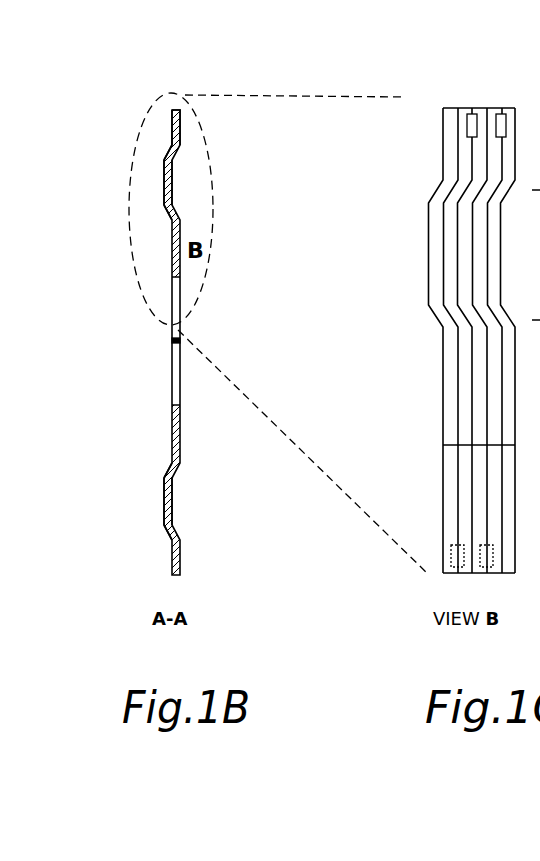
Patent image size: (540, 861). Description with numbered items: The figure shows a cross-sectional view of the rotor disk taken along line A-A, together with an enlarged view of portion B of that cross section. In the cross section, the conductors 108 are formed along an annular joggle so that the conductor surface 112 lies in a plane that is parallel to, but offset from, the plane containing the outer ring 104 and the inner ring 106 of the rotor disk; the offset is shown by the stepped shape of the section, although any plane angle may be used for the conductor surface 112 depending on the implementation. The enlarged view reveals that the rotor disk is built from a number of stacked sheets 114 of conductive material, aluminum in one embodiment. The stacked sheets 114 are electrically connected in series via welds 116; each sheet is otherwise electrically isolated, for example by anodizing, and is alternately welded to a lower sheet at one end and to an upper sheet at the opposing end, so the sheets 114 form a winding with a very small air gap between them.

In FIG. 1B, the outer ring 104 is at (172, 113).
In FIG. 1B, the inner ring 106 is at (172, 245).
In FIG. 1B, the conductors 108 is at (174, 180).
In FIG. 1B, the conductor surface 112 is at (158, 183).
In FIG. 1C, the stacked sheets 114 is at (523, 120).
In FIG. 1C, the welds 116 is at (466, 128).